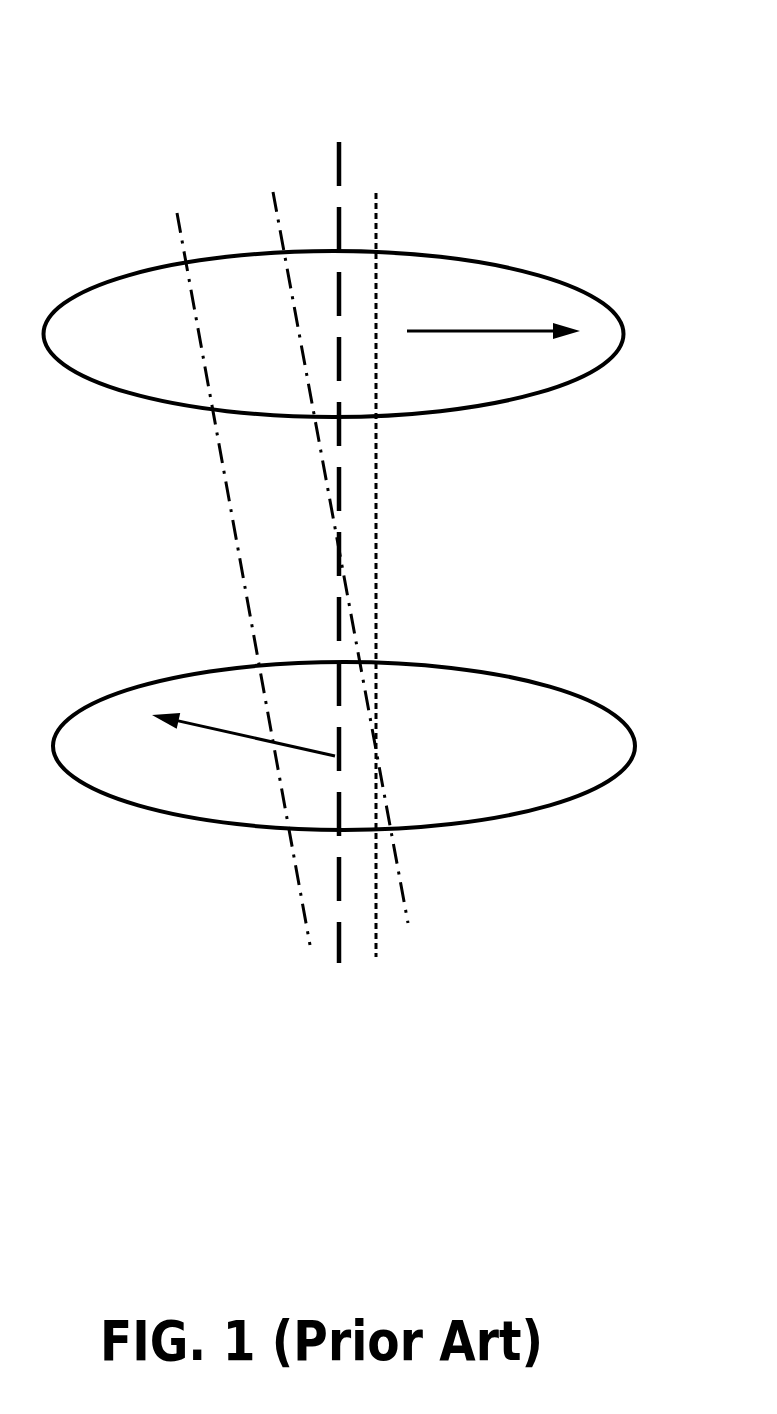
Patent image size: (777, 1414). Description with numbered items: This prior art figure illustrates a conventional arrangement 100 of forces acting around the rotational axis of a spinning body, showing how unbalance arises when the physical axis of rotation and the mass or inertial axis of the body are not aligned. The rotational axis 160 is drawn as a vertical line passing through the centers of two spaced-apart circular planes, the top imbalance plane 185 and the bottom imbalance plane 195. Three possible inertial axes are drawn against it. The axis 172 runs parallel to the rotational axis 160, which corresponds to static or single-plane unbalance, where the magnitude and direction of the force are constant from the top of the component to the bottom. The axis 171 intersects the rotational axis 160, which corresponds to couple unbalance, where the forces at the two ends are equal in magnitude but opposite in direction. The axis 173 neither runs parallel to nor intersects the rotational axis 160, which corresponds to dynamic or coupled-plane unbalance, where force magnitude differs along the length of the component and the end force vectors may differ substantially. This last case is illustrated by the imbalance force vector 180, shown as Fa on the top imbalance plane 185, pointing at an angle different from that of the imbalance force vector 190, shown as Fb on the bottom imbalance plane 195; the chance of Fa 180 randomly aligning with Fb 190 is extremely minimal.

The prior art disk drive system 100 is at (352, 34).
The rotational axis 160 is at (338, 537).
The inertial axis (intersecting) 171 is at (327, 541).
The inertial axis (parallel) 172 is at (374, 558).
The inertial axis (skewed) 173 is at (230, 560).
The imbalance force vector 180 is at (493, 315).
The top imbalance plane 185 is at (475, 257).
The imbalance force vector 190 is at (243, 745).
The bottom imbalance plane 195 is at (475, 668).